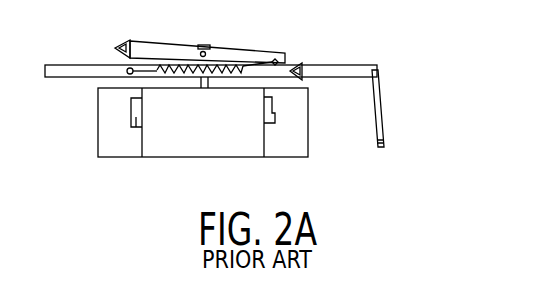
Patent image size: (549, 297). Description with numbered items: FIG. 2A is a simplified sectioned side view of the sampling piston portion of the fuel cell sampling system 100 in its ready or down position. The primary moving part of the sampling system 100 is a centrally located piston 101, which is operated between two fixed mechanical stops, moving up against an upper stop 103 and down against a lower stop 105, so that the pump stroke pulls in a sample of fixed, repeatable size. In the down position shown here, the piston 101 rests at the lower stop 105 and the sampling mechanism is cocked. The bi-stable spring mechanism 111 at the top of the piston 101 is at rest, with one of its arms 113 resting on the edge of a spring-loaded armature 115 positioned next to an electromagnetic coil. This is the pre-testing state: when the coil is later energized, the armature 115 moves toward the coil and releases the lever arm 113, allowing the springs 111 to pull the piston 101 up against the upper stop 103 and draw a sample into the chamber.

The sampling system 100 is at (257, 103).
The piston 101 is at (167, 143).
The upper stop 103 is at (272, 104).
The lower stop 105 is at (273, 130).
The bi-stable spring mechanism 111 is at (248, 65).
The arm 113 is at (338, 64).
The spring-loaded armature 115 is at (377, 74).